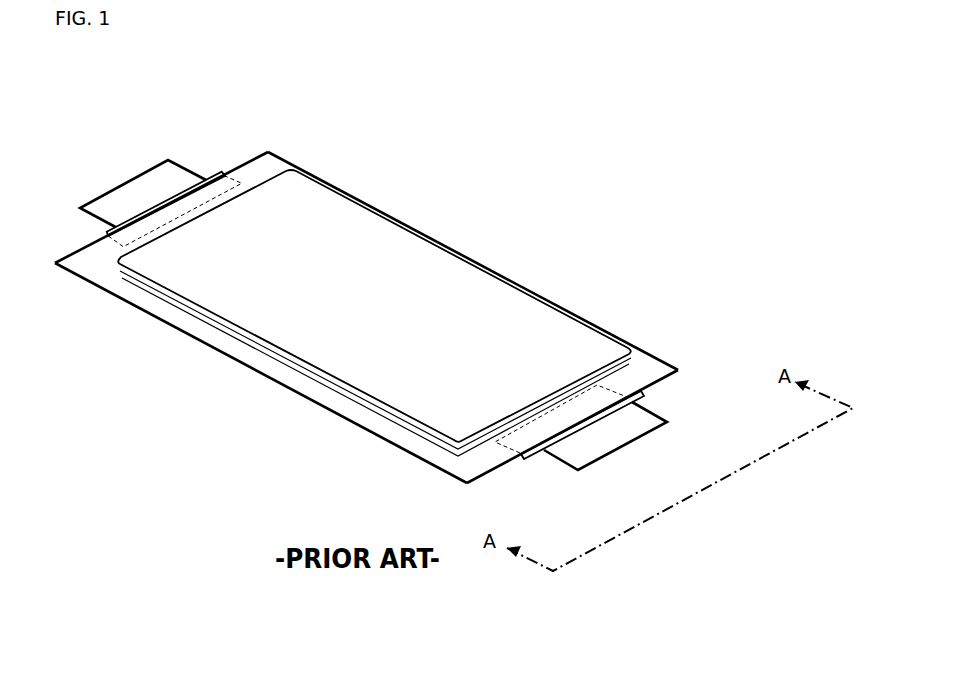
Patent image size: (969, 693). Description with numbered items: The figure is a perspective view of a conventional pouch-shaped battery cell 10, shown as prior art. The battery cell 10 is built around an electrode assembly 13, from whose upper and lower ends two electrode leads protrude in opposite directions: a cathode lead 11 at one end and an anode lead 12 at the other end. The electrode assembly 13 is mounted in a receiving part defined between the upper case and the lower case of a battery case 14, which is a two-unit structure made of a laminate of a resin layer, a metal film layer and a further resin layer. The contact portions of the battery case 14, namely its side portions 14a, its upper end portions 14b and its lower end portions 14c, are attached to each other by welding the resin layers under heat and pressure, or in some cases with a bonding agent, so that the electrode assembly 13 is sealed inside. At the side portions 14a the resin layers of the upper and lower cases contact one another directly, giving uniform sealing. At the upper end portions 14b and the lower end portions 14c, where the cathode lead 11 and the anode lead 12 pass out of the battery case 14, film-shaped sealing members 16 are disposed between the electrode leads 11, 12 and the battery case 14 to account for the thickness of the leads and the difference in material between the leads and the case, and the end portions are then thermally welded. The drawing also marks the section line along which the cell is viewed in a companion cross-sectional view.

The pouch-shaped battery cell 10 is at (98, 107).
The cathode lead 11 is at (140, 188).
The anode lead 12 is at (635, 443).
The electrode assembly 13 is at (452, 270).
The battery case 14 is at (680, 365).
The side portions 14a is at (182, 322).
The upper end portions 14b is at (270, 163).
The lower end portions 14c is at (492, 455).
The film-shaped sealing member 16 is at (641, 393).